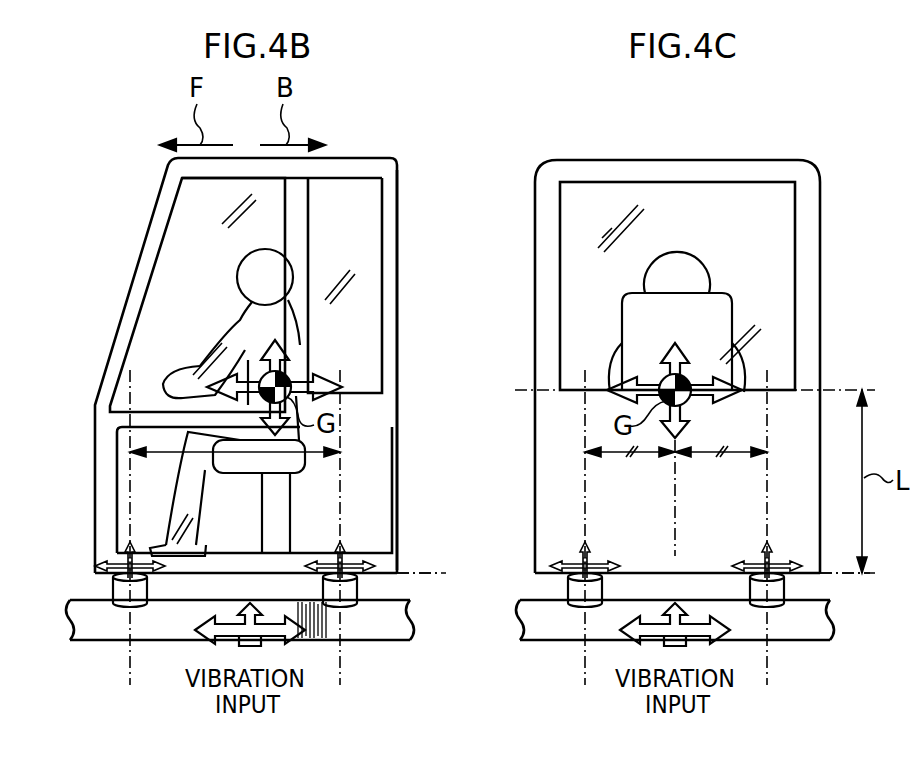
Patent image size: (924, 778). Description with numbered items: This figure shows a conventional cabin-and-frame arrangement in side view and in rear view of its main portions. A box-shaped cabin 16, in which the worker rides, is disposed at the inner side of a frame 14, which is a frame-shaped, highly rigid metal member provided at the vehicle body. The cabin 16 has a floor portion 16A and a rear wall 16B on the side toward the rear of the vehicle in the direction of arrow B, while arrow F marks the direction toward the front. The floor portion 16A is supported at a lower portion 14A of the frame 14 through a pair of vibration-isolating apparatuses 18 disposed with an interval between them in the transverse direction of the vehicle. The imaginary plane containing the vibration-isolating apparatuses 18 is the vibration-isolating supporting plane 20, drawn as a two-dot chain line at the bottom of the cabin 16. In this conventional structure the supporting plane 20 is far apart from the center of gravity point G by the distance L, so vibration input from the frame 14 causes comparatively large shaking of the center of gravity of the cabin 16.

In FIG. 4B, the frame 14 is at (75, 613).
In FIG. 4C, the frame 14 is at (517, 622).
In FIG. 4B, the lower portion of the frame 14A is at (92, 580).
In FIG. 4C, the lower portion of the frame 14A is at (527, 592).
In FIG. 4B, the cabin 16 is at (128, 265).
In FIG. 4C, the cabin 16 is at (820, 243).
In FIG. 4B, the floor portion of the cabin 16A is at (207, 575).
In FIG. 4C, the floor portion of the cabin 16A is at (703, 578).
In FIG. 4B, the rear wall of the cabin 16B is at (400, 284).
In FIG. 4B, the vibration-isolating apparatuses 18 is at (124, 604).
In FIG. 4C, the vibration-isolating apparatuses 18 is at (605, 604).
In FIG. 4B, the vibration-isolating supporting plane 20 is at (428, 573).
In FIG. 4C, the vibration-isolating supporting plane 20 is at (845, 574).